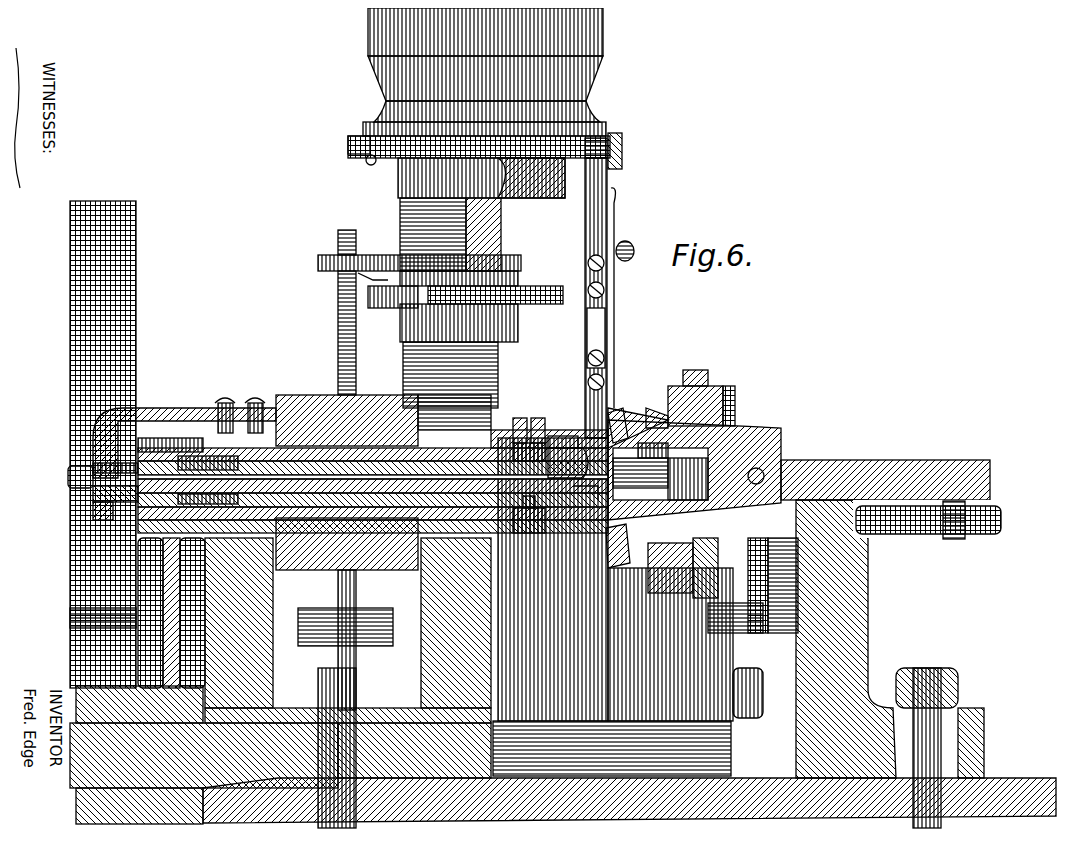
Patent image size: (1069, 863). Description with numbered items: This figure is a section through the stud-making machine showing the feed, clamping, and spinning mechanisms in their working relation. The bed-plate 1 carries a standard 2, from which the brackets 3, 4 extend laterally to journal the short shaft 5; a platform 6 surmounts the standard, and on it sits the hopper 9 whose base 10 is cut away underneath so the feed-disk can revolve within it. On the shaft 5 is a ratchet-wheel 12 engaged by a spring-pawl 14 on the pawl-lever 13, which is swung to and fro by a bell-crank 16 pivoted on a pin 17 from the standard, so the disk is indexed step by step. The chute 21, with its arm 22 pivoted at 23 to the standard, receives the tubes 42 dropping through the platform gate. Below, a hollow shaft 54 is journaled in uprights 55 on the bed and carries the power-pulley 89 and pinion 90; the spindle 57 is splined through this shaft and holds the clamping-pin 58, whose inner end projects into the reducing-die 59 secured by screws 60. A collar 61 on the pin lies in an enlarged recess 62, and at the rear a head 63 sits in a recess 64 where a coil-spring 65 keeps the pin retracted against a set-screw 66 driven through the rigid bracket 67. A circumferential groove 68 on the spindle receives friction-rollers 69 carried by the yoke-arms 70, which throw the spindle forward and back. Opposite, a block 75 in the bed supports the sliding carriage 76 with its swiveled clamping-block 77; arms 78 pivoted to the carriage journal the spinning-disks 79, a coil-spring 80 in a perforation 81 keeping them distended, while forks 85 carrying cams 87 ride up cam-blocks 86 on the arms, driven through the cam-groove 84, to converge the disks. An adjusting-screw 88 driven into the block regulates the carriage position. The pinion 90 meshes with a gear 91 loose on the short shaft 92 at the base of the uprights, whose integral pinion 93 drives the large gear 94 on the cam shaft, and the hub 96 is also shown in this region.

The bed-plate 1 is at (629, 800).
The standard 2 is at (583, 559).
The bracket 3 is at (527, 180).
The bracket 4 is at (505, 318).
The short shaft 5 is at (470, 226).
The platform 6 is at (340, 142).
The hopper 9 is at (570, 22).
The hopper-base 10 is at (590, 118).
The ratchet-wheel 12 is at (535, 282).
The pawl-lever 13 is at (365, 255).
The spring-pawl 14 is at (380, 298).
The bell-crank 16 is at (330, 318).
The pin 17 is at (285, 630).
The chute 21 is at (598, 285).
The arm 22 is at (600, 205).
The pivot 23 is at (614, 152).
The tube 42 is at (582, 470).
The shaft 54 is at (165, 445).
The upright 55 is at (348, 623).
The spindle 57 is at (290, 392).
The clamping-pin 58 is at (495, 440).
The reducing-die 59 is at (555, 420).
The screw 60 is at (568, 447).
The collar 61 is at (505, 528).
The recess 62 is at (490, 482).
The head 63 is at (88, 462).
The recess 64 is at (130, 500).
The coil-spring 65 is at (95, 495).
The set-screw 66 is at (60, 472).
The bracket 67 is at (140, 428).
The circumferential groove 68 is at (530, 498).
The friction-roller 69 is at (520, 412).
The yoke-arm 70 is at (532, 408).
The block 75 is at (855, 610).
The sliding carriage 76 is at (870, 462).
The clamping-block 77 is at (660, 471).
The arm 78 is at (725, 428).
The spinning-disk 79 is at (612, 410).
The coil-spring 80 is at (735, 470).
The perforation 81 is at (756, 464).
The cam-groove 84 is at (677, 568).
The fork 85 is at (705, 378).
The cam-block 86 is at (717, 400).
The cam 87 is at (648, 405).
The adjusting-screw 88 is at (920, 518).
The power-pulley 89 is at (365, 392).
The pinion 90 is at (150, 405).
The gear 91 is at (66, 608).
The short shaft 92 is at (280, 748).
The pinion 93 is at (283, 704).
The large gear 94 is at (66, 282).
The hub 96 is at (735, 560).